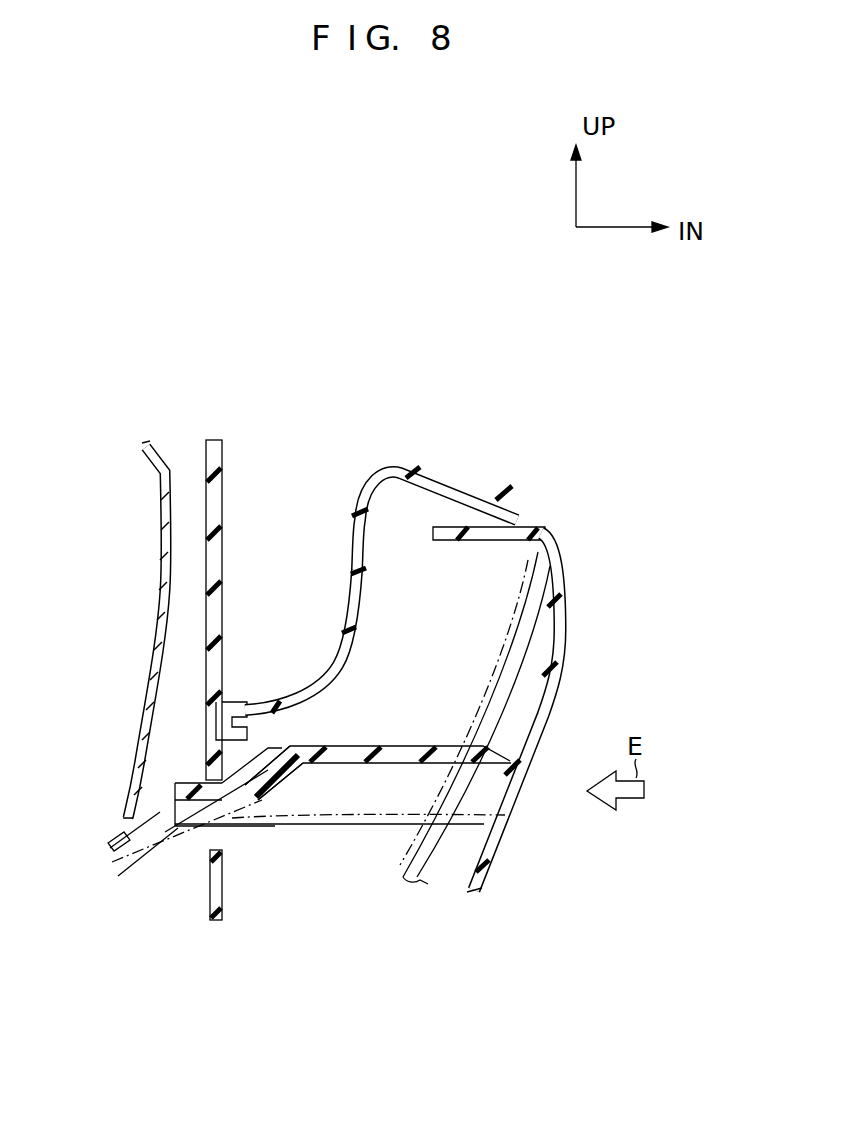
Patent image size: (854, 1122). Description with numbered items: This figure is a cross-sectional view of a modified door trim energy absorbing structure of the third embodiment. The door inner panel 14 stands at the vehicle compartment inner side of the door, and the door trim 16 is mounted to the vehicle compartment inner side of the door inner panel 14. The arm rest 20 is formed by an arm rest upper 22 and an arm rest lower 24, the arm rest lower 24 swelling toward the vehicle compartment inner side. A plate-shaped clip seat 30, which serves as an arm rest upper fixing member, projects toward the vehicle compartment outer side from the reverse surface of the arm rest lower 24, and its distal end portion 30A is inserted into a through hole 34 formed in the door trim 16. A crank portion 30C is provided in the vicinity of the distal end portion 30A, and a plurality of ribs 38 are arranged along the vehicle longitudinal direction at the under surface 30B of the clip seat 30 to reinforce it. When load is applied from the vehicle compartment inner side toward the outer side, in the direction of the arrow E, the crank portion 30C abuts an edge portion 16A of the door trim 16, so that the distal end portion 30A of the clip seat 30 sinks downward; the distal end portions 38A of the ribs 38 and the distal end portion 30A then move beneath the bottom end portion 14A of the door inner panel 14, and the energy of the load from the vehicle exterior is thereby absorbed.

The door inner panel 14 is at (160, 489).
The bottom end portion of the inner panel 14A is at (118, 848).
The door trim 16 is at (288, 448).
The edge portion of the door trim 16A is at (203, 786).
The arm rest 20 is at (562, 386).
The arm rest upper 22 is at (450, 472).
The arm rest lower 24 is at (548, 525).
The clip seat 30 is at (398, 750).
The distal end portion of the clip seat 30A is at (173, 792).
The under surface of the clip seat 30B is at (360, 767).
The crank portion 30C is at (262, 757).
The through hole 34 is at (226, 846).
The ribs 38 is at (287, 826).
The distal end portions of the ribs 38A is at (173, 812).